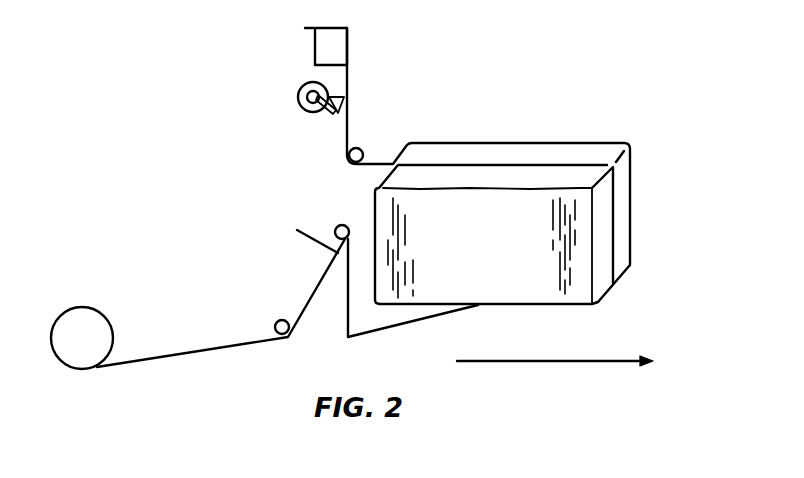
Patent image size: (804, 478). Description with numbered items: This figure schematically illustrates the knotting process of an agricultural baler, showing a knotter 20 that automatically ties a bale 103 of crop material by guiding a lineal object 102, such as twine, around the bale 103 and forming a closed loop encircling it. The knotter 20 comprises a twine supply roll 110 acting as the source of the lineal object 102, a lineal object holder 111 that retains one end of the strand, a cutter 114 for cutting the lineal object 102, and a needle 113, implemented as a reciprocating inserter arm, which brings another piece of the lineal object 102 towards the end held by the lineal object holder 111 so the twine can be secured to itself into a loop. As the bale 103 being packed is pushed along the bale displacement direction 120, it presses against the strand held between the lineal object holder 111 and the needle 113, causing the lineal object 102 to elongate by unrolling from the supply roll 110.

The knotter 20 is at (554, 99).
The lineal object 102 is at (349, 118).
The bale 103 is at (593, 148).
The twine supply roll 110 is at (100, 308).
The lineal object holder 111 is at (315, 48).
The needle 113 is at (319, 244).
The cutter 114 is at (298, 97).
The bale displacement direction 120 is at (597, 361).